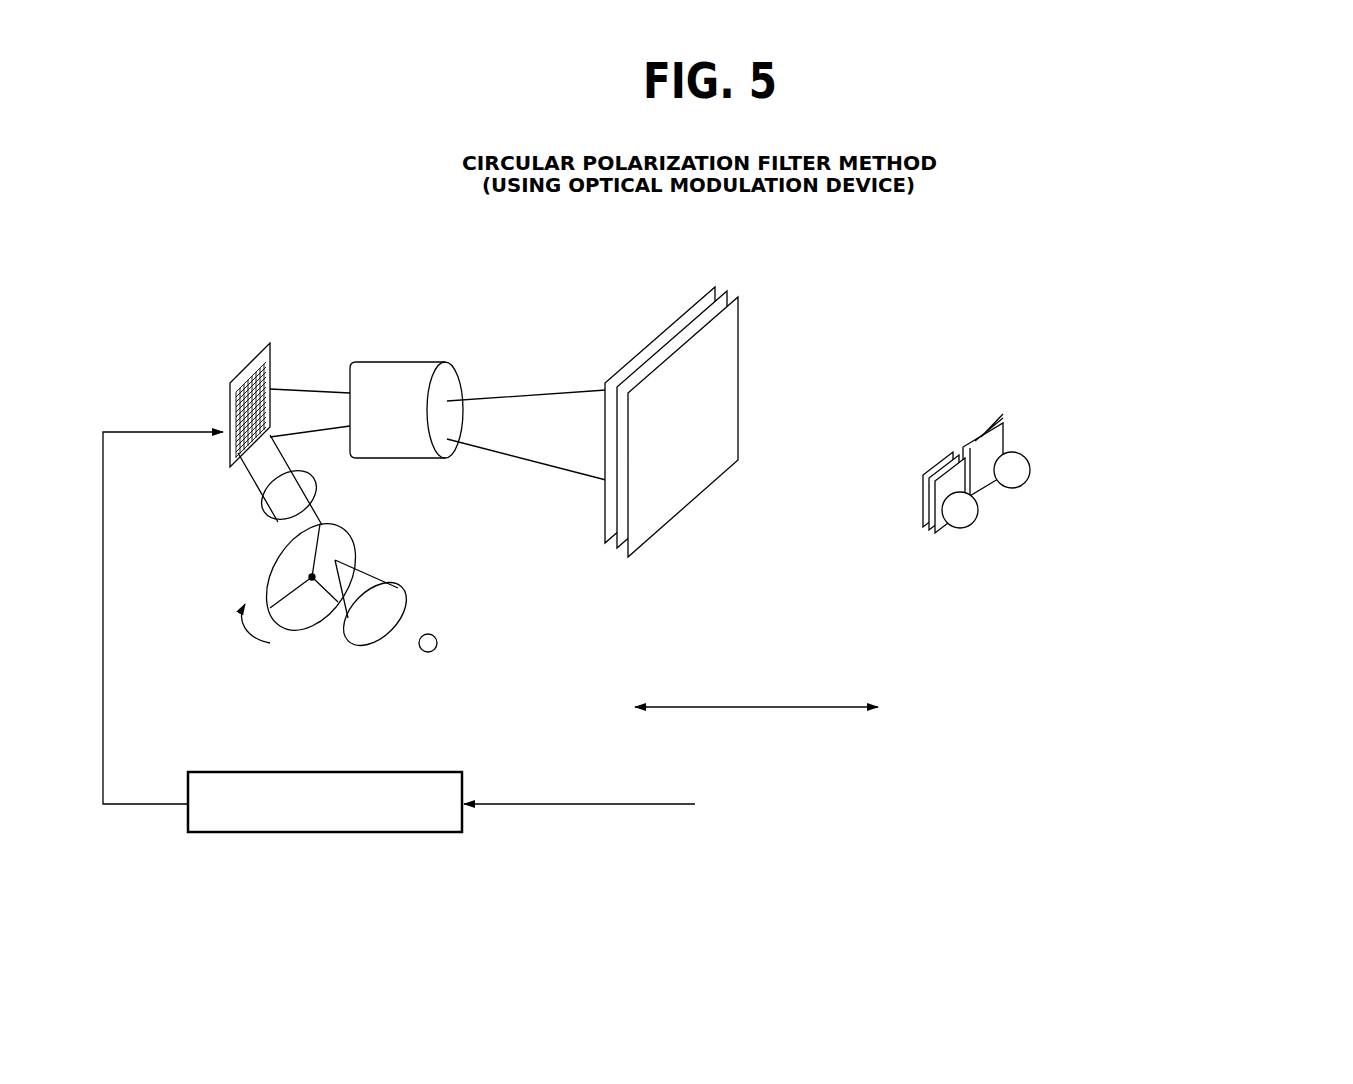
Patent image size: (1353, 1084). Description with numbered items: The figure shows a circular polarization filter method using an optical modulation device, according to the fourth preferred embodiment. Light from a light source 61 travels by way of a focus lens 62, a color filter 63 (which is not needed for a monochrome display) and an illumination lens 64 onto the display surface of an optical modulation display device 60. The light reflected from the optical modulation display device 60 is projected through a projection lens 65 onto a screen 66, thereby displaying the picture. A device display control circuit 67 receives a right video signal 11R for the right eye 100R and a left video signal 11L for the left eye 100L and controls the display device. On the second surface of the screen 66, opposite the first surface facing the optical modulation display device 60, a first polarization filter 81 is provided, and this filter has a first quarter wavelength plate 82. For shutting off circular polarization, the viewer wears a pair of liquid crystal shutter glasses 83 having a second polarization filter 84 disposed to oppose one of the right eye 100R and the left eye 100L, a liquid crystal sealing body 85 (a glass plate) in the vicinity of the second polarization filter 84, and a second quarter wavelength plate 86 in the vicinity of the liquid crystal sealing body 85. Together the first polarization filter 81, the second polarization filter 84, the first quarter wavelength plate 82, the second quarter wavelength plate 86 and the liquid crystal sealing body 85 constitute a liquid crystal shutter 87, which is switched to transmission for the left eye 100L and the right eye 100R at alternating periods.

The optical modulation display device 60 is at (226, 357).
The light source 61 is at (497, 660).
The focus lens 62 is at (416, 614).
The color filter 63 is at (304, 641).
The illumination lens 64 is at (331, 484).
The projection lens 65 is at (475, 388).
The screen 66 is at (695, 300).
The device display control circuit 67 is at (393, 772).
The first polarization filter 81 is at (729, 282).
The first 1/4 wavelength plate 82 is at (682, 513).
The liquid crystal shutter glasses 83 is at (1005, 404).
The second polarization filter 84 is at (989, 497).
The liquid crystal sealing body 85 is at (941, 456).
The second 1/4 wavelength plate 86 is at (919, 461).
The liquid crystal shutter 87 is at (765, 680).
The left eye 100L is at (957, 512).
The right eye 100R is at (1017, 466).
The right video signal 11R is at (619, 787).
The left video signal 11L is at (619, 787).